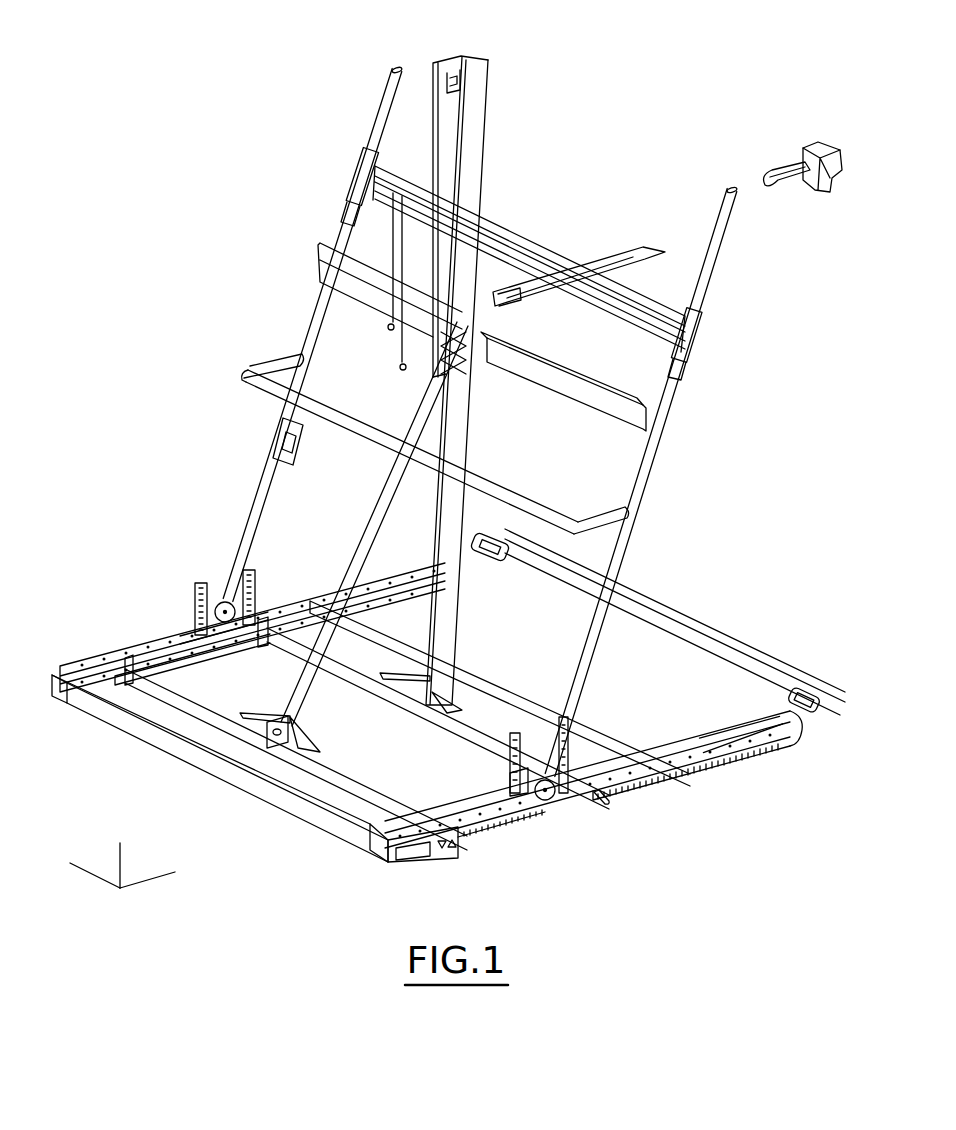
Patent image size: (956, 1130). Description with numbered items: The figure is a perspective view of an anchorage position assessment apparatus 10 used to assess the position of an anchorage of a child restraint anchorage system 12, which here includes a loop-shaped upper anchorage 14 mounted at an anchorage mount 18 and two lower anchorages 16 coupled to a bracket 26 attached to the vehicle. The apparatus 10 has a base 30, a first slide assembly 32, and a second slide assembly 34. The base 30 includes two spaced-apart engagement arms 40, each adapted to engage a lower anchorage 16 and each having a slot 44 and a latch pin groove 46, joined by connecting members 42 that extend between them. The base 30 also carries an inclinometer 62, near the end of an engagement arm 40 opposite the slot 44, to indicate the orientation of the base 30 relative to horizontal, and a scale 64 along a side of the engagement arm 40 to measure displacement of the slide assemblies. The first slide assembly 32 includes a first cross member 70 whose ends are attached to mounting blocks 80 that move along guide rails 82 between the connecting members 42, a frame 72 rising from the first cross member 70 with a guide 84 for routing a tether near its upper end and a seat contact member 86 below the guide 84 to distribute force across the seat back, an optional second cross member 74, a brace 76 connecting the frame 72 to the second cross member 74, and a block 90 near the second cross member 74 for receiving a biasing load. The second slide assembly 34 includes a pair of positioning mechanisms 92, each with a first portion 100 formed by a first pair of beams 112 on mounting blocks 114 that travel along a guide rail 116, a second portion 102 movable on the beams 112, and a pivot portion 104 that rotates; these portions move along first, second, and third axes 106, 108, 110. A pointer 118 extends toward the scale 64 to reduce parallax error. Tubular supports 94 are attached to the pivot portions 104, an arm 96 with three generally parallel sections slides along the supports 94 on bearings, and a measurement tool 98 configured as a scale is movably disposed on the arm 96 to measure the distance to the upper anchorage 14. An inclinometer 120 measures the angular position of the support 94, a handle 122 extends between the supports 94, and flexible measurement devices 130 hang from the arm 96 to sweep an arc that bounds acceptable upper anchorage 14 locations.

The anchorage position assessment apparatus 10 is at (138, 42).
The child restraint anchorage system 12 is at (509, 578).
The upper anchorage 14 is at (784, 170).
The lower anchorage 16 is at (492, 540).
The anchorage mount 18 is at (800, 158).
The bracket 26 is at (666, 605).
The base 30 is at (114, 760).
The first slide assembly 32 is at (552, 70).
The second slide assembly 34 is at (302, 68).
The engagement arm 40 is at (90, 663).
The connecting member 42 is at (258, 810).
The slot 44 is at (796, 738).
The latch pin groove 46 is at (700, 774).
The inclinometer 62 is at (442, 864).
The scale 64 is at (513, 838).
The first cross member 70 is at (457, 717).
The frame 72 is at (476, 432).
The second cross member 74 is at (346, 757).
The brace 76 is at (320, 695).
The mounting block 80 is at (190, 665).
The guide rail 82 is at (214, 655).
The guide 84 is at (447, 93).
The seat contact member 86 is at (548, 356).
The block 90 is at (262, 722).
The positioning mechanism 92 is at (176, 552).
The support 94 is at (254, 478).
The arm 96 is at (528, 236).
The measurement tool 98 is at (612, 250).
The first portion 100 is at (508, 757).
The second portion 102 is at (214, 597).
The pivot portion 104 is at (236, 604).
The first axis 106 is at (155, 870).
The second axis 108 is at (122, 852).
The third axis 110 is at (86, 866).
The first pair of beams 112 is at (192, 600).
The mounting block 114 is at (180, 633).
The guide rail 116 is at (118, 650).
The pointer 118 is at (582, 810).
The inclinometer 120 is at (292, 468).
The handle 122 is at (345, 428).
The measurement device 130 is at (390, 322).